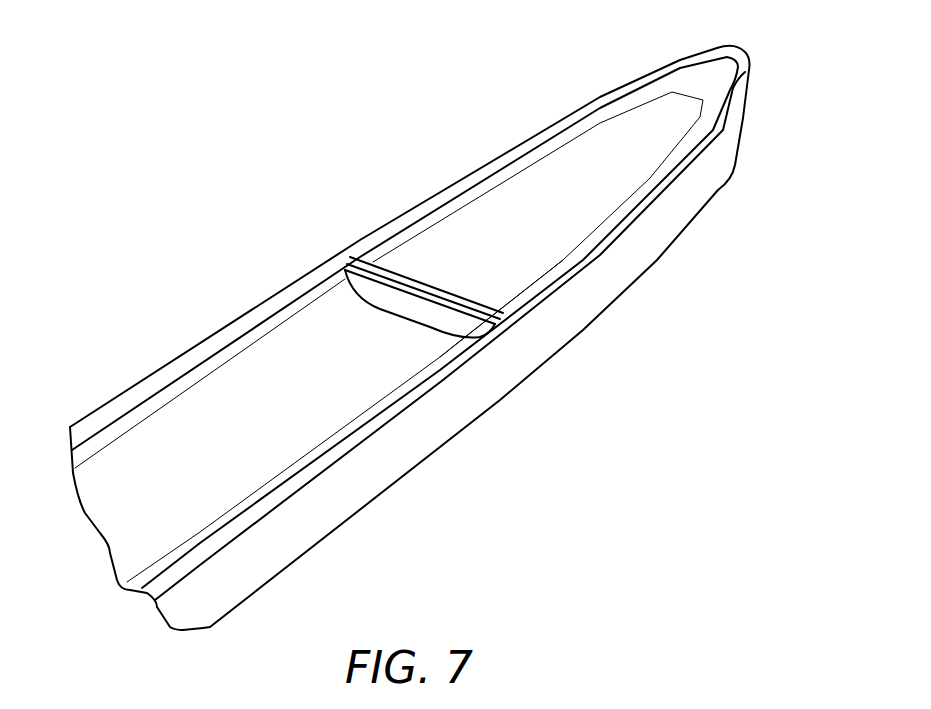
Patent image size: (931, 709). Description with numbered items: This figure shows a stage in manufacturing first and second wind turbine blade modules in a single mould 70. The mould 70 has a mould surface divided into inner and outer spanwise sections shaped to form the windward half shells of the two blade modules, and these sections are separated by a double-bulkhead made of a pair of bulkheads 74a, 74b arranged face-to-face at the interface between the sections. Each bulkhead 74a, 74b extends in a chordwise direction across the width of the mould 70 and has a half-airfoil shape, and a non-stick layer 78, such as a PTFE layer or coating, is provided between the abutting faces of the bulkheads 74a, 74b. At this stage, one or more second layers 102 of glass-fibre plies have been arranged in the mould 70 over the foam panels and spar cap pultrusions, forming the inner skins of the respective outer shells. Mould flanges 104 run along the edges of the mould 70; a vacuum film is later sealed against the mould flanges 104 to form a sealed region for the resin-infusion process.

The mould 70 is at (300, 224).
The non-stick layer 78 is at (370, 267).
The mould flanges 104 is at (271, 303).
The second layers 102 is at (152, 437).
The bulkhead 74a is at (467, 327).
The bulkhead 74b is at (493, 302).